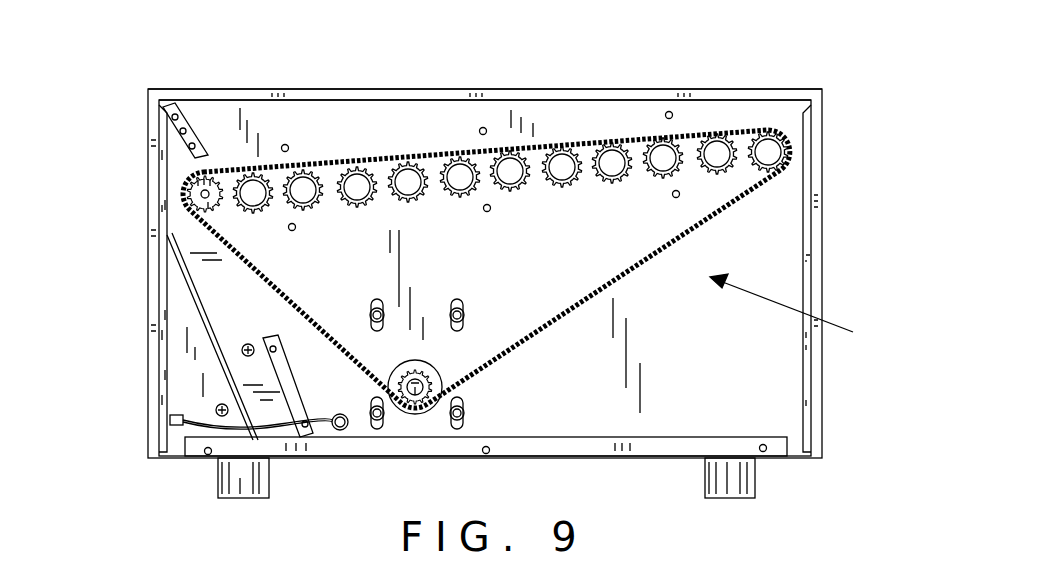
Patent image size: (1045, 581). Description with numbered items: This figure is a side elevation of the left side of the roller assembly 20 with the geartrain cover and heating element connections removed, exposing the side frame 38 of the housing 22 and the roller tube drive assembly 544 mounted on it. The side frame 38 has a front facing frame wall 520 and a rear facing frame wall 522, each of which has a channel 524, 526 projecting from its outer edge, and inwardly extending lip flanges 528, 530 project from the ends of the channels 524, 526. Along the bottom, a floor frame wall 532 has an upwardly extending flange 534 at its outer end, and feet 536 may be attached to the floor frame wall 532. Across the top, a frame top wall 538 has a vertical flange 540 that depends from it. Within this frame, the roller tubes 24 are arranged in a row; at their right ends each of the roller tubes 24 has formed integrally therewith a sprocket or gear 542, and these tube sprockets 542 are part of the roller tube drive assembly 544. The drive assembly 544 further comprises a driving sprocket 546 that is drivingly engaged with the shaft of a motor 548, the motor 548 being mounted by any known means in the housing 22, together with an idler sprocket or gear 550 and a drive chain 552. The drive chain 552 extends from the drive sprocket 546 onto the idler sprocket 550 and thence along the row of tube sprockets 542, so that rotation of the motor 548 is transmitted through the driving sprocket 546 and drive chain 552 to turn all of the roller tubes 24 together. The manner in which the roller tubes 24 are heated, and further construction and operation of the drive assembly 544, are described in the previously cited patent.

The dispenser housing 20 is at (178, 74).
The housing 22 is at (777, 75).
The roller tubes 24 is at (429, 215).
The side frame 38 is at (312, 82).
The front facing frame wall 520 is at (150, 268).
The rear facing frame wall 522 is at (826, 108).
The channel 524 is at (154, 300).
The channel 526 is at (815, 212).
The lip flange 528 is at (165, 348).
The lip flange 530 is at (806, 272).
The floor frame wall 532 is at (336, 462).
The upwardly extending flange 534 is at (515, 448).
The feet 536 is at (242, 490).
The frame top wall 538 is at (453, 88).
The top inner rail 540 is at (560, 98).
The sprocket or gear 542 is at (603, 183).
The roller tube drive assembly 544 is at (801, 310).
The driving sprocket 546 is at (427, 372).
The motor 548 is at (397, 372).
The idler sprocket or gear 550 is at (190, 185).
The drive chain 552 is at (520, 343).